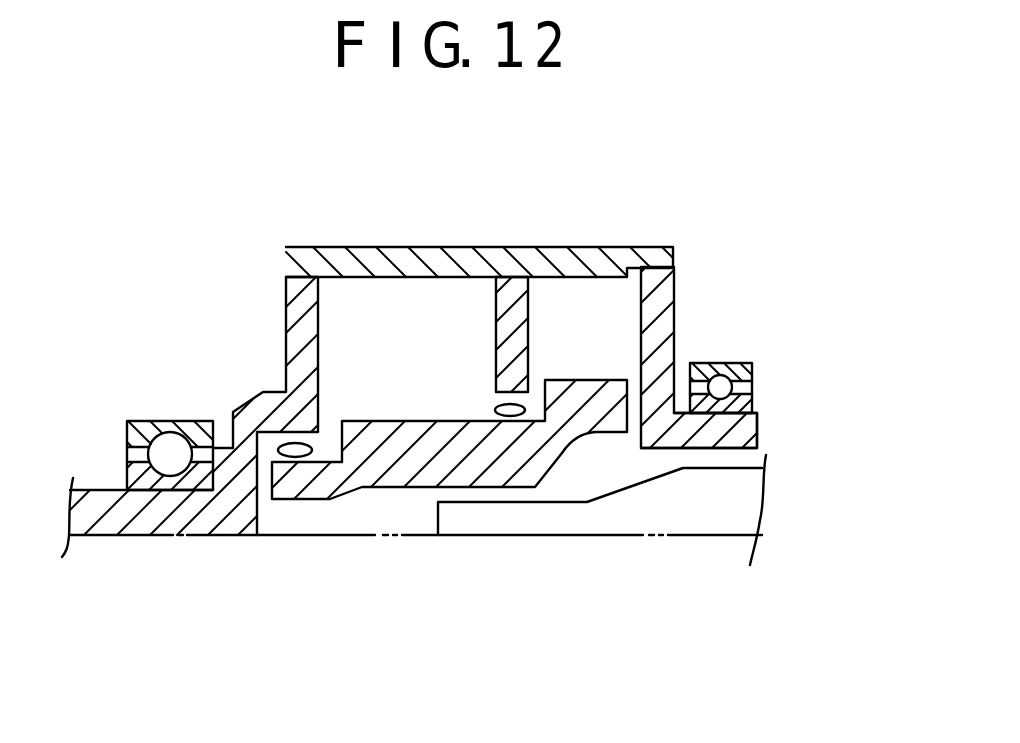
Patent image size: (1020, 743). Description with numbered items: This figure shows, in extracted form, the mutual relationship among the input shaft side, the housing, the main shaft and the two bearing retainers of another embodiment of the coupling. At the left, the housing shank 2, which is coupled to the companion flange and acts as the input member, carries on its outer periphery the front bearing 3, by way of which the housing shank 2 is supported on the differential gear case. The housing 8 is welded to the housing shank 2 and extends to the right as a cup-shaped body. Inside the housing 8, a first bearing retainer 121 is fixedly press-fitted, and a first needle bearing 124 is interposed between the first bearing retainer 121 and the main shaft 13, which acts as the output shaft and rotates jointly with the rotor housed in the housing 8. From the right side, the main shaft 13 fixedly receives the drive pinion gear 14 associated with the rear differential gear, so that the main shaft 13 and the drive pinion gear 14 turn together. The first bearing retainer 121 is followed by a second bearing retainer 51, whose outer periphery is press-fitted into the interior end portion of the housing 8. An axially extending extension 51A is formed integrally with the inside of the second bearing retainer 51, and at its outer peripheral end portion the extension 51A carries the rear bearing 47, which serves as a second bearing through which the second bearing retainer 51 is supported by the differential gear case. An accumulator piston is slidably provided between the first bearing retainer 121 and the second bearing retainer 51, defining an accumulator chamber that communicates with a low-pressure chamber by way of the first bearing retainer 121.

The housing shank 2 is at (160, 505).
The front bearing 3 is at (187, 421).
The housing 8 is at (485, 258).
The main shaft 13 is at (403, 462).
The drive pinion gear 14 is at (697, 513).
The rear bearing 47 is at (752, 363).
The second bearing retainer 51 is at (676, 305).
The extension 51A is at (745, 437).
The first bearing retainer 121 is at (523, 343).
The first needle bearing 124 is at (497, 404).